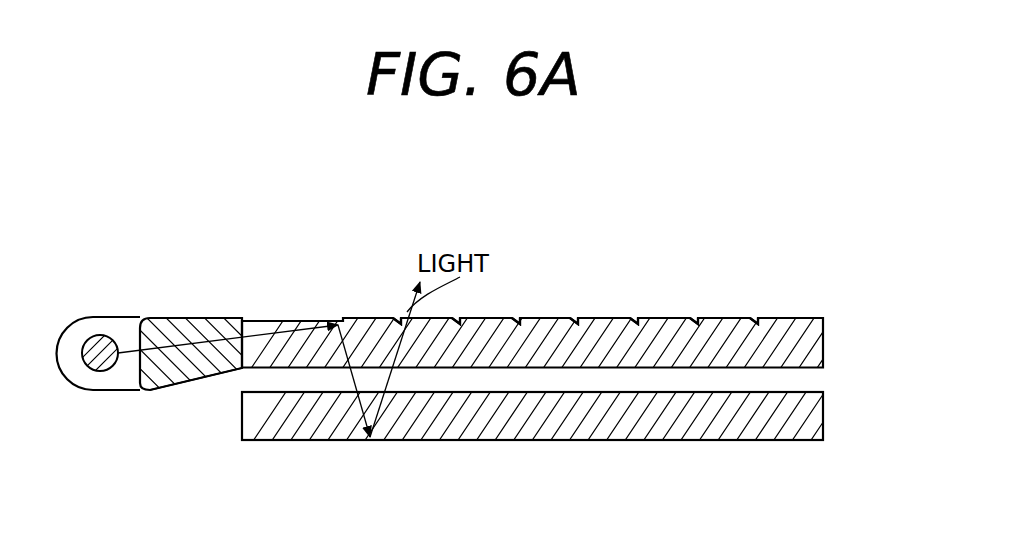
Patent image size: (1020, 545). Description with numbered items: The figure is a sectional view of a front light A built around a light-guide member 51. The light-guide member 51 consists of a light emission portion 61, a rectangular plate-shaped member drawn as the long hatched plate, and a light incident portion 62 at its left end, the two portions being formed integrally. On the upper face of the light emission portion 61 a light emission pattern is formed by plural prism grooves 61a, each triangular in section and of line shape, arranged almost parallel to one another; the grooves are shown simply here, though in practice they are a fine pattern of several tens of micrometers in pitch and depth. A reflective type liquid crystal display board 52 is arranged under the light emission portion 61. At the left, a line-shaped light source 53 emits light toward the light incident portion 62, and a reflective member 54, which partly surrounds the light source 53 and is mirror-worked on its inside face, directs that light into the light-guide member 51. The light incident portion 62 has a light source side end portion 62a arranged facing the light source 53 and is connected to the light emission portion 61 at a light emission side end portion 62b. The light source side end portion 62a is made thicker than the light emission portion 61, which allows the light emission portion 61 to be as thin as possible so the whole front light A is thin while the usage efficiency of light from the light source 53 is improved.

The front light A is at (843, 248).
The light-guide member 51 is at (840, 347).
The reflective type liquid crystal display board 52 is at (825, 413).
The light source 53 is at (98, 335).
The reflective member 54 is at (90, 390).
The light emission portion 61 is at (824, 236).
The prism grooves 61a is at (398, 316).
The light incident portion 62 is at (242, 236).
The light source side end portion 62a is at (135, 342).
The light emission side end portion 62b is at (235, 355).